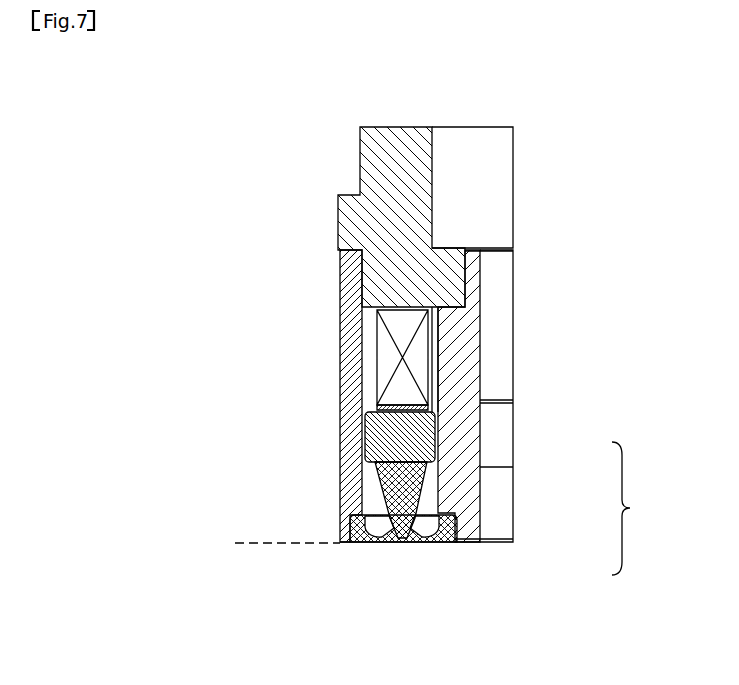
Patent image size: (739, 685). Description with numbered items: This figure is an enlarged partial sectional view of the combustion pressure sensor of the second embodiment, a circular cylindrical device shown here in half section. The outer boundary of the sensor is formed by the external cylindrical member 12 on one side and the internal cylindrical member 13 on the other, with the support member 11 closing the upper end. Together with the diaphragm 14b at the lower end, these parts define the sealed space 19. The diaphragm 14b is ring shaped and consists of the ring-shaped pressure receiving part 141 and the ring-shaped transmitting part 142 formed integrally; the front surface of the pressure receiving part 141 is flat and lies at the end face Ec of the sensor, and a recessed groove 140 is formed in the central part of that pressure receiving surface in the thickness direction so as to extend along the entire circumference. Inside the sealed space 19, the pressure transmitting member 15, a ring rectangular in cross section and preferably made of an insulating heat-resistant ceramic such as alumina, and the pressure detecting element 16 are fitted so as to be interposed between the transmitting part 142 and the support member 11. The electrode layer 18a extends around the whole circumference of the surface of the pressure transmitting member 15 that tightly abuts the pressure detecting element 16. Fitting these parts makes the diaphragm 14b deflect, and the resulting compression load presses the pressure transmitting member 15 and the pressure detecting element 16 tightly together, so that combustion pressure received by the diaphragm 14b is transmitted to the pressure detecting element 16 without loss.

The support member 11 is at (382, 178).
The external cylindrical member 12 is at (348, 283).
The internal cylindrical member 13 is at (468, 330).
The pressure transmitting member 15 is at (380, 440).
The pressure detecting element 16 is at (417, 377).
The sealed space 19 is at (370, 357).
The electrode layer 18a is at (377, 409).
The diaphragm 14b is at (644, 508).
The groove 140 is at (400, 540).
The pressure receiving part 141 is at (413, 540).
The transmitting part 142 is at (432, 466).
The end face Ec is at (287, 582).